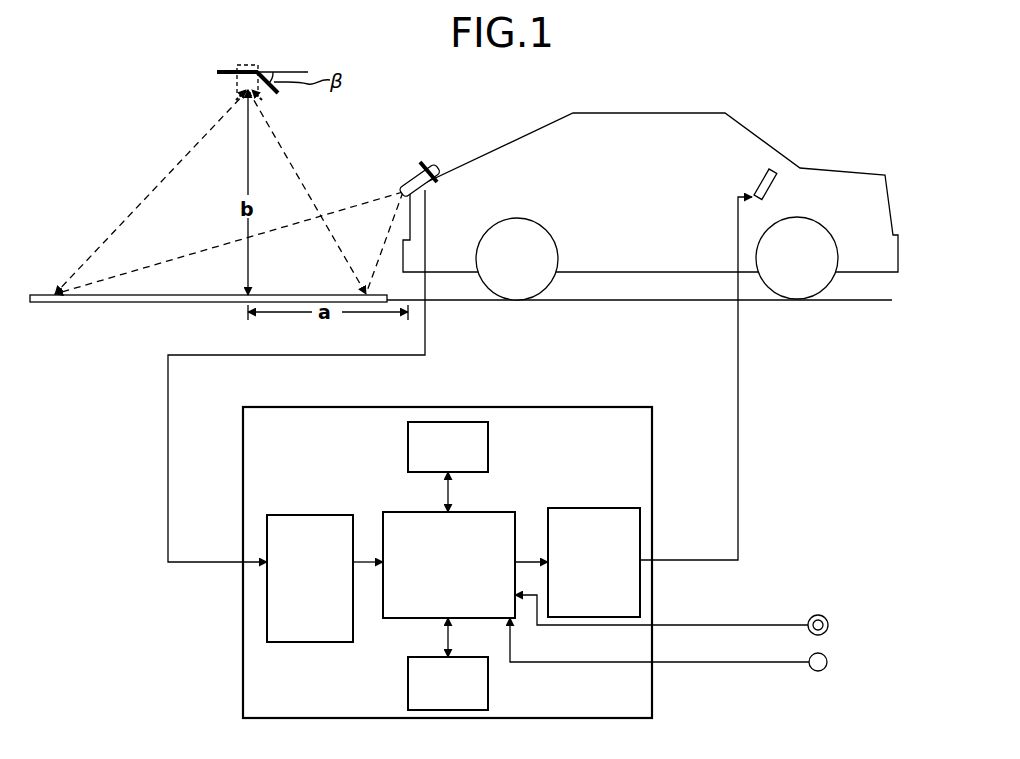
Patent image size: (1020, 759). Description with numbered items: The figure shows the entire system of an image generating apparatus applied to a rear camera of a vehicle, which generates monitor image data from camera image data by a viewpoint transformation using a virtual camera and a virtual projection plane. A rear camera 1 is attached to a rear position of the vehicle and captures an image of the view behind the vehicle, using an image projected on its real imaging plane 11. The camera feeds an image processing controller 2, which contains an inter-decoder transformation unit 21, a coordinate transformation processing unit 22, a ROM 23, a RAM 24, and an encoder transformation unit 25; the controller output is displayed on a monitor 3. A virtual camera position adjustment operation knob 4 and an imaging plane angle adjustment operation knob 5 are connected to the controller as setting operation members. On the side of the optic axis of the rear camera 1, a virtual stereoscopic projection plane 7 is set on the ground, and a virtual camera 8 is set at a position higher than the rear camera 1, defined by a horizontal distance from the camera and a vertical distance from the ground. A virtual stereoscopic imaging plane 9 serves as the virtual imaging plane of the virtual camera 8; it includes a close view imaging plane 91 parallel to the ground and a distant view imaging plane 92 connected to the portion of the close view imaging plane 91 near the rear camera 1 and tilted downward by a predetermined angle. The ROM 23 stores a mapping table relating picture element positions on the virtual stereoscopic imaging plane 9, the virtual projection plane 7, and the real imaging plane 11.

The rear camera 1 is at (429, 159).
The real imaging plane 11 is at (428, 168).
The image processing controller 2 is at (567, 407).
The inter-decoder transformation unit 21 is at (285, 515).
The coordinate transformation processing unit 22 is at (486, 512).
The ROM 23 is at (408, 680).
The RAM 24 is at (408, 458).
The encoder transformation unit 25 is at (600, 508).
The monitor 3 is at (760, 183).
The virtual camera position adjustment operation knob 4 is at (828, 620).
The imaging plane angle adjustment operation knob 5 is at (827, 657).
The virtual stereoscopic projection plane 7 is at (281, 292).
The virtual camera 8 is at (251, 63).
The virtual stereoscopic imaging plane 9 is at (260, 72).
The close view imaging plane 91 is at (228, 72).
The distant view imaging plane 92 is at (274, 90).